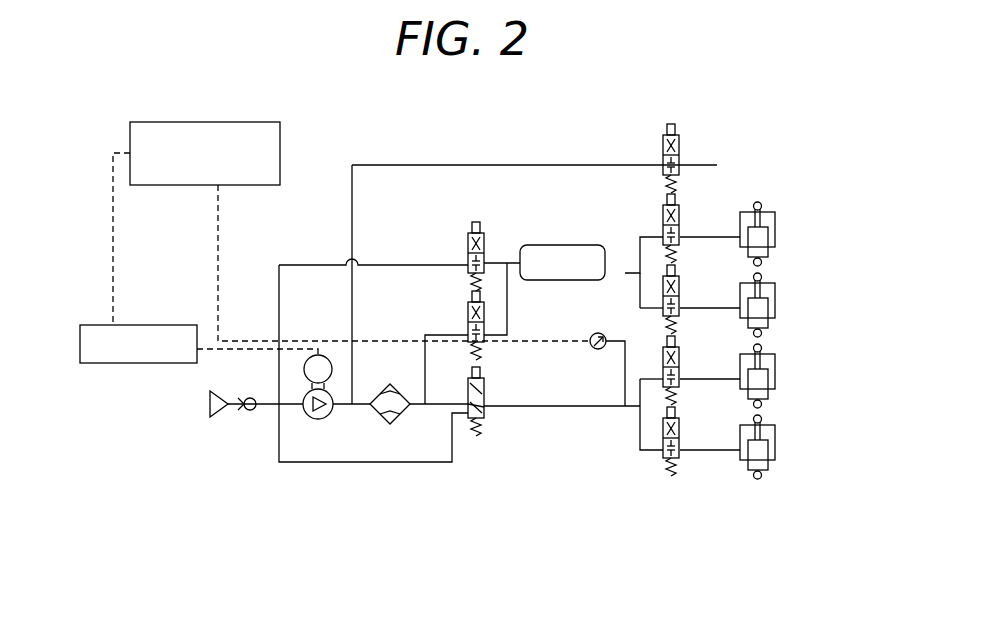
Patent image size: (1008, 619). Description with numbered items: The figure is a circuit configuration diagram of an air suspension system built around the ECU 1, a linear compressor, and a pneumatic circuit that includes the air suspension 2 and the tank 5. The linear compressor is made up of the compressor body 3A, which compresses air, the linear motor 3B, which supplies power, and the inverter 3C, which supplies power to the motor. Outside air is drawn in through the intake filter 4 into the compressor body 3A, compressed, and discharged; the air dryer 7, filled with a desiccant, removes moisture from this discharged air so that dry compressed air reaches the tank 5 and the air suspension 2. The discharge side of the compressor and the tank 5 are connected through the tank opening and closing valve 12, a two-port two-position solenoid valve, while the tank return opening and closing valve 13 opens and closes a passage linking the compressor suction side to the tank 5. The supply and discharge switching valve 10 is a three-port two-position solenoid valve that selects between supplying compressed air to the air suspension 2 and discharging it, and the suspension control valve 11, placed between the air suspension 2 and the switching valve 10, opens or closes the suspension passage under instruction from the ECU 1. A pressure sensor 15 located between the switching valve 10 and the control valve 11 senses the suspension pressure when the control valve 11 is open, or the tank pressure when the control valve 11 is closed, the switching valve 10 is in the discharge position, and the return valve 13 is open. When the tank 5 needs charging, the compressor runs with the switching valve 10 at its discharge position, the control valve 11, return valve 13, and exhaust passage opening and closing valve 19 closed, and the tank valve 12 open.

The ECU 1 is at (200, 122).
The air suspension 2 is at (760, 206).
The compressor body 3A is at (322, 419).
The linear motor 3B is at (320, 355).
The inverter 3C is at (138, 363).
The intake filter 4 is at (213, 417).
The tank 5 is at (558, 245).
The air dryer 7 is at (395, 421).
The supply and discharge switching valve 10 is at (484, 373).
The suspension control valve 11 is at (680, 198).
The tank opening and closing valve 12 is at (468, 305).
The tank return opening and closing valve 13 is at (468, 238).
The pressure sensor 15 is at (598, 349).
The exhaust passage opening and closing valve 19 is at (680, 128).